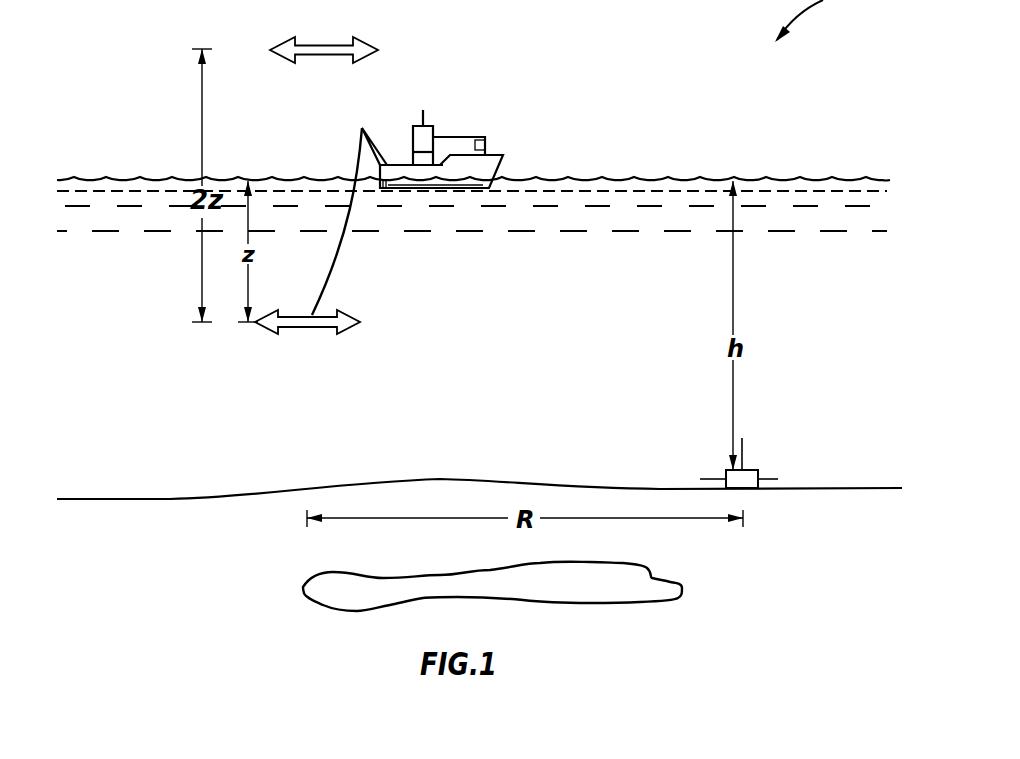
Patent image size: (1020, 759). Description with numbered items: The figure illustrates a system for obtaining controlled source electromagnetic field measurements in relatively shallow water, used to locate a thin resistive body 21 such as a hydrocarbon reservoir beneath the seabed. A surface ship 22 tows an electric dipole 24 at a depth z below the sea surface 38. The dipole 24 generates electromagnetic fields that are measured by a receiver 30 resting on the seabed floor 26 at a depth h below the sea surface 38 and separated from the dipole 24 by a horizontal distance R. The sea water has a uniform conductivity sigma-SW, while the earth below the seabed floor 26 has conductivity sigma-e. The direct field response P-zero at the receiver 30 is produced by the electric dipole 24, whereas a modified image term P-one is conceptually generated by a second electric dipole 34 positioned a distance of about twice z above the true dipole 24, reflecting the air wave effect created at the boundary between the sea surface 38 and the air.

The resistive body 21 is at (647, 600).
The surface ship 22 is at (503, 172).
The electric dipole 24 is at (327, 330).
The seabed floor 26 is at (495, 480).
The receiver 30 is at (757, 470).
The second electric dipole 34 is at (335, 57).
The sea surface 38 is at (663, 179).